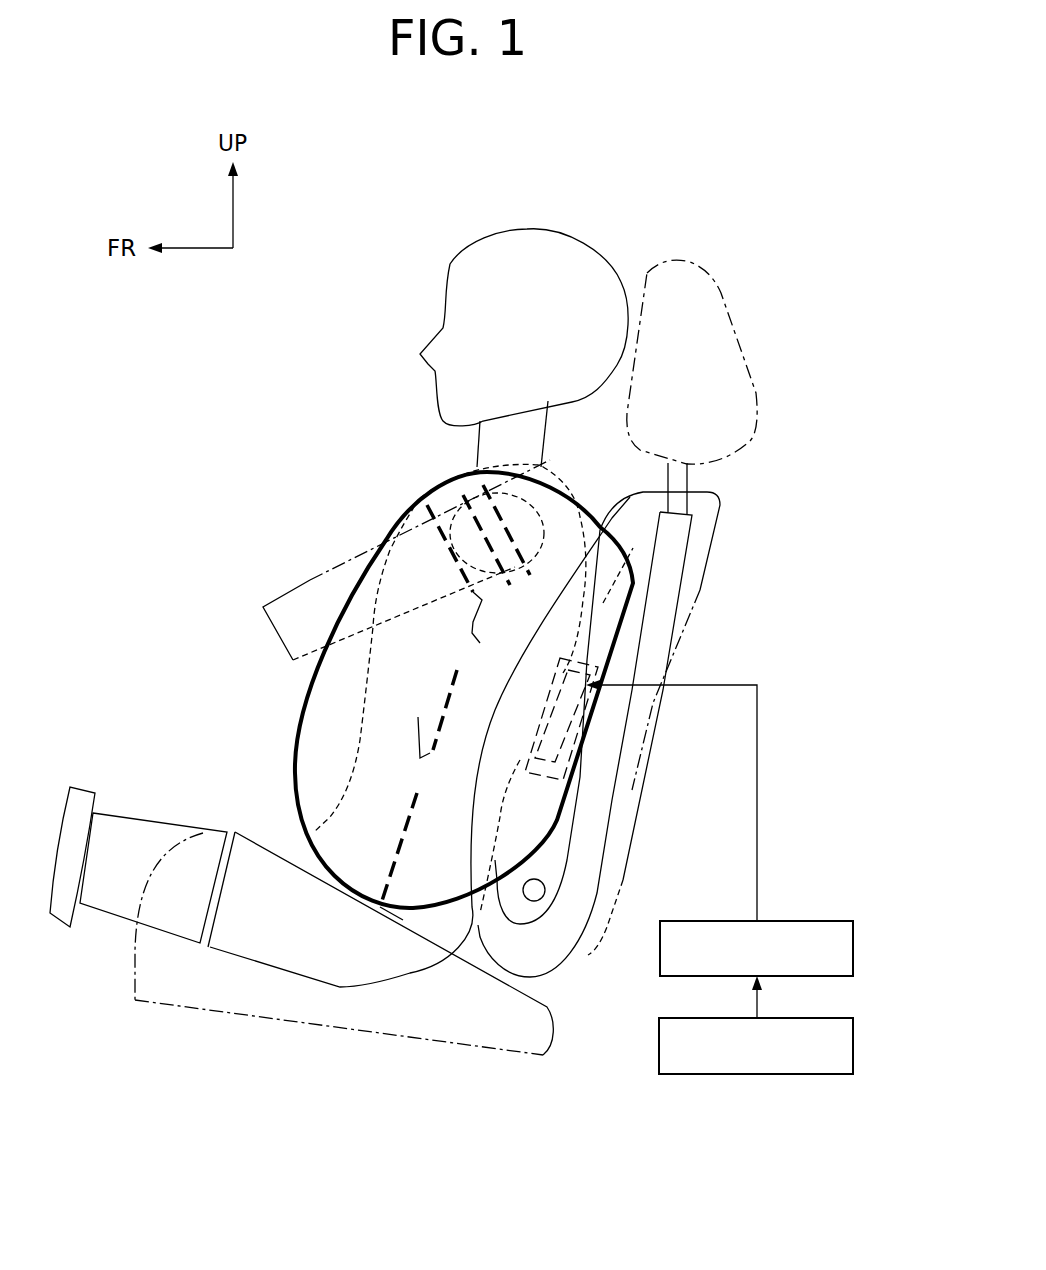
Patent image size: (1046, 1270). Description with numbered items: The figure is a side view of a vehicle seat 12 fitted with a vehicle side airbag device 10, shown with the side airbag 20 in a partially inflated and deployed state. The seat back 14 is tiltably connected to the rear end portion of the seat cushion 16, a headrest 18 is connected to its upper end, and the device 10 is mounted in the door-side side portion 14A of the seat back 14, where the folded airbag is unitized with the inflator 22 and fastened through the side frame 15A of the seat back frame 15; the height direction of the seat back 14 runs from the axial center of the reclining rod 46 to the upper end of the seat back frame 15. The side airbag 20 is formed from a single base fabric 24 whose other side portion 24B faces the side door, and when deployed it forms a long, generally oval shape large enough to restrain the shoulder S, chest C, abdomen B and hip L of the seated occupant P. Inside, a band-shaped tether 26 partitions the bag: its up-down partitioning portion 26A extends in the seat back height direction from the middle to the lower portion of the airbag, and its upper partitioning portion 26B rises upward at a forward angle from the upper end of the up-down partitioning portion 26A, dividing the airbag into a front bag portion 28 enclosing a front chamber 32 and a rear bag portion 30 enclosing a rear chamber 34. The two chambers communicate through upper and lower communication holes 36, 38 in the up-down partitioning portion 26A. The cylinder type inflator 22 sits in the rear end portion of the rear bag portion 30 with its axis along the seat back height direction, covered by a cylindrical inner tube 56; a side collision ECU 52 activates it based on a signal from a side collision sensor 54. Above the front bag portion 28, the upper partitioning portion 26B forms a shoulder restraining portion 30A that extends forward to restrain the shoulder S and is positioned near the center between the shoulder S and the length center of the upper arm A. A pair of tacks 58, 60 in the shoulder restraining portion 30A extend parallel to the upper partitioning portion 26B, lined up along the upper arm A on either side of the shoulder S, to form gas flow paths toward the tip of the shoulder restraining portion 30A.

The vehicle side airbag device 10 is at (320, 478).
The vehicle seat 12 is at (733, 254).
The seat back 14 is at (674, 708).
The door-side side portion 14A is at (697, 588).
The seat back frame 15 is at (657, 744).
The side frame 15A is at (682, 550).
The seat cushion 16 is at (275, 1020).
The headrest 18 is at (737, 340).
The side airbag 20 is at (636, 617).
The inflator 22 is at (577, 745).
The base fabric 24 is at (464, 722).
The other side portion 24B is at (413, 887).
The tether 26 is at (440, 700).
The up-down partitioning portion 26A is at (395, 840).
The upper partitioning portion 26B is at (393, 520).
The front bag portion 28 is at (327, 683).
The rear bag portion 30 is at (523, 683).
The shoulder restraining portion 30A is at (507, 503).
The front chamber 32 is at (320, 712).
The rear chamber 34 is at (570, 718).
The communication hole 36 is at (483, 640).
The communication hole 38 is at (417, 718).
The reclining rod 46 is at (547, 890).
The side collision ECU 52 is at (660, 957).
The side collision sensor 54 is at (659, 1052).
The inner tube 56 is at (583, 780).
The tack 58 is at (482, 538).
The tack 60 is at (505, 527).
The seated occupant P is at (493, 234).
The shoulder S is at (570, 493).
The upper arm A is at (297, 583).
The abdomen B is at (385, 748).
The chest C is at (340, 567).
The hip L is at (347, 845).